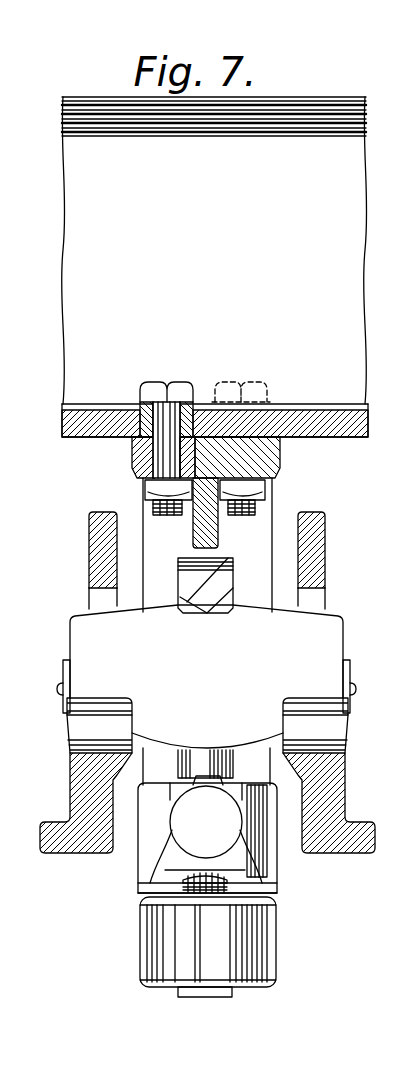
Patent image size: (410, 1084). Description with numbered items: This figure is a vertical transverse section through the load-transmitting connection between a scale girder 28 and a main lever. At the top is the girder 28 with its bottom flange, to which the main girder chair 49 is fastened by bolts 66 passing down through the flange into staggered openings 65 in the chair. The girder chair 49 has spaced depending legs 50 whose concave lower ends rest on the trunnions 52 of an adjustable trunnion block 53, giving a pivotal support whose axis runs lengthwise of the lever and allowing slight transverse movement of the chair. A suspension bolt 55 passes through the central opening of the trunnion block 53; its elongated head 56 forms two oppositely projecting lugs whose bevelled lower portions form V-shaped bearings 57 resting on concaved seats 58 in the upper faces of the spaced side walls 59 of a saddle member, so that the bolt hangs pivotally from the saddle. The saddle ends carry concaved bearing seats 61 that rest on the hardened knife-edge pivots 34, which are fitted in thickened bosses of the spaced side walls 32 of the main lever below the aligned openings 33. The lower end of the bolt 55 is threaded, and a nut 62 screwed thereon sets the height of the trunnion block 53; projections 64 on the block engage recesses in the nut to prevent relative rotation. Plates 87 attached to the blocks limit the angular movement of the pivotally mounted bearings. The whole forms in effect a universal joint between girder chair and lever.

The plate 28 is at (215, 250).
The side walls 32 is at (92, 531).
The openings 33 is at (92, 596).
The knife-edge pivot bearing 34 is at (83, 732).
The main girder chair 49 is at (279, 456).
The depending legs 50 is at (268, 519).
The trunnions 52 is at (206, 822).
The trunnion block 53 is at (152, 856).
The suspension bolt 55 is at (193, 756).
The elongated head 56 is at (193, 563).
The V-shaped bearings 57 is at (232, 597).
The concaved seats 58 is at (201, 612).
The side walls of saddle member 59 is at (206, 676).
The concaved bearing seats 61 is at (101, 703).
The nut 62 is at (208, 947).
The complementary projections 64 is at (142, 900).
The staggered openings 65 is at (134, 456).
The bolts 66 is at (153, 389).
The plates 87 is at (63, 703).